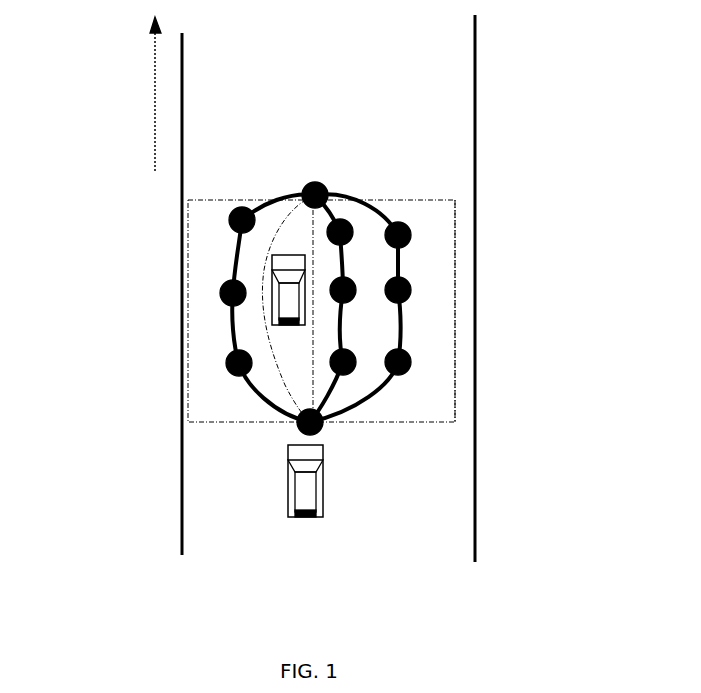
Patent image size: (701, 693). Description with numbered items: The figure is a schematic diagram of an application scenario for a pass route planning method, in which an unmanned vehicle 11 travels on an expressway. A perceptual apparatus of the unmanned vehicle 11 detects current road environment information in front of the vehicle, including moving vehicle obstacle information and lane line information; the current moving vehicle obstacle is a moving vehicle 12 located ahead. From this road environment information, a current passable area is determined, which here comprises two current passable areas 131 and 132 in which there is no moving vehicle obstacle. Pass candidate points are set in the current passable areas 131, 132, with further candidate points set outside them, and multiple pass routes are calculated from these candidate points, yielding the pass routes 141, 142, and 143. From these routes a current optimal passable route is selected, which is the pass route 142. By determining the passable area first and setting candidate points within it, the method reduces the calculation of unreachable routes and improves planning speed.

The unmanned vehicle 11 is at (298, 497).
The moving vehicle 12 is at (290, 327).
The current passable area 131 is at (205, 327).
The current passable area 132 is at (427, 303).
The pass route 141 is at (243, 207).
The pass route 142 is at (317, 198).
The pass route 143 is at (405, 225).